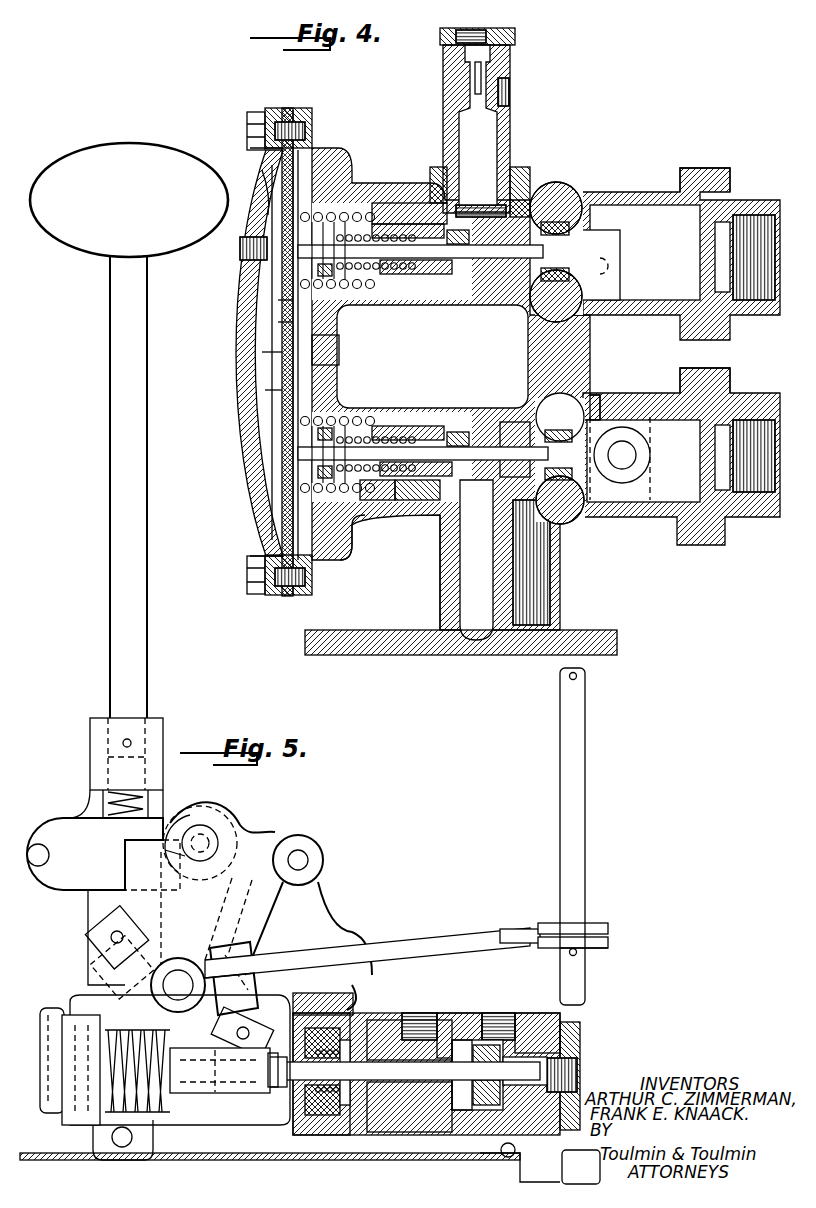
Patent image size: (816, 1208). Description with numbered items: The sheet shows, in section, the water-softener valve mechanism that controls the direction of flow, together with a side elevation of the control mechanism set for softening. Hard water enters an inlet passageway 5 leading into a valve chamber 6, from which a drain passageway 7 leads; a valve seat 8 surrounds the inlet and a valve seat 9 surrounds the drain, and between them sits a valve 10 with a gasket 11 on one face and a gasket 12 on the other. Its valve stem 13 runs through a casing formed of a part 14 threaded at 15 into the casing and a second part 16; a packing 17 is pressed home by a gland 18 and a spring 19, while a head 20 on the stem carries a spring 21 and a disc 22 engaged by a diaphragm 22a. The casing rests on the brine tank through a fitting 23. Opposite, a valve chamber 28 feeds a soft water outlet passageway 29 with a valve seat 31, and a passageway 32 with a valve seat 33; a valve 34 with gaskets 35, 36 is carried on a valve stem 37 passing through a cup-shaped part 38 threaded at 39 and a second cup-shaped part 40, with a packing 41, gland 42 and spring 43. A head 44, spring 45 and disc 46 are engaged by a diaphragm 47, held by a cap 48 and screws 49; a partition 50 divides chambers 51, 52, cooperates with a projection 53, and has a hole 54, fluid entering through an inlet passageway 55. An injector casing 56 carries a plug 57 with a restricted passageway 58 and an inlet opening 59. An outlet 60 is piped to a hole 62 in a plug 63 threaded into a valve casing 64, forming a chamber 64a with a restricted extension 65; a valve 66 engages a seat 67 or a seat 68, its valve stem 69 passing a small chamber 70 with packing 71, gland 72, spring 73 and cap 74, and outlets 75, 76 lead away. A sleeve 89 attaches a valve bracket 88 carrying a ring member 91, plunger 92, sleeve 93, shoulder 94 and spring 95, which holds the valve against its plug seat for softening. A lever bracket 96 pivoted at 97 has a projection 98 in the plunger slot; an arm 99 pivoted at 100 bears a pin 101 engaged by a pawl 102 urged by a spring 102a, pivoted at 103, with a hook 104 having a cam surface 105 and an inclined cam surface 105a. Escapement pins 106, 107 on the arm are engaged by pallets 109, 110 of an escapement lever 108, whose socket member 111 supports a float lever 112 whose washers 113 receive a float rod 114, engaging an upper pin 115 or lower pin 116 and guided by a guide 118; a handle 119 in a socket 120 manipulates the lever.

In FIG. 4, the inlet passageway 5 is at (722, 495).
In FIG. 4, the valve chamber 6 is at (592, 398).
In FIG. 4, the drain passageway 7 is at (458, 562).
In FIG. 4, the valve seat 8 is at (606, 405).
In FIG. 4, the valve seat 9 is at (515, 418).
In FIG. 4, the valve 10 is at (555, 486).
In FIG. 4, the gasket 11 is at (574, 490).
In FIG. 4, the gasket 12 is at (476, 560).
In FIG. 4, the valve stem 13 is at (478, 462).
In FIG. 4, the casing part 14 is at (478, 430).
In FIG. 4, the threads 15 is at (406, 424).
In FIG. 4, the casing part 16 is at (340, 428).
In FIG. 4, the packing 17 is at (446, 424).
In FIG. 4, the gland 18 is at (420, 500).
In FIG. 4, the spring 19 is at (378, 502).
In FIG. 4, the head 20 is at (290, 478).
In FIG. 4, the spring 21 is at (350, 522).
In FIG. 4, the disc 22 is at (282, 510).
In FIG. 4, the diaphragm 22a is at (282, 527).
In FIG. 4, the fitting 23 is at (612, 642).
In FIG. 4, the valve chamber 28 is at (592, 208).
In FIG. 4, the soft water outlet passageway 29 is at (634, 210).
In FIG. 4, the valve seat 31 is at (606, 272).
In FIG. 4, the passageway 32 is at (540, 190).
In FIG. 4, the valve seat 33 is at (545, 192).
In FIG. 4, the valve 34 is at (570, 216).
In FIG. 4, the gasket 35 is at (586, 312).
In FIG. 4, the gasket 36 is at (432, 356).
In FIG. 4, the valve stem 37 is at (506, 255).
In FIG. 4, the cup-shaped part 38 is at (432, 190).
In FIG. 4, the threads 39 is at (416, 212).
In FIG. 4, the cup-shaped part 40 is at (358, 203).
In FIG. 4, the packing 41 is at (440, 282).
In FIG. 4, the gland 42 is at (412, 296).
In FIG. 4, the spring 43 is at (388, 300).
In FIG. 4, the head 44 is at (285, 282).
In FIG. 4, the spring 45 is at (355, 296).
In FIG. 4, the disc 46 is at (280, 305).
In FIG. 4, the diaphragm 47 is at (278, 322).
In FIG. 4, the cap 48 is at (238, 430).
In FIG. 4, the screws 49 is at (255, 114).
In FIG. 4, the partition 50 is at (262, 352).
In FIG. 4, the chamber 51 is at (258, 440).
In FIG. 4, the chamber 52 is at (262, 200).
In FIG. 4, the projection 53 is at (320, 355).
In FIG. 4, the hole 54 is at (265, 390).
In FIG. 4, the inlet passageway 55 is at (240, 252).
In FIG. 4, the injector casing 56 is at (448, 122).
In FIG. 4, the plug 57 is at (510, 40).
In FIG. 4, the restricted passageway 58 is at (472, 86).
In FIG. 4, the inlet opening 59 is at (510, 96).
In FIG. 4, the outlet 60 is at (630, 482).
In FIG. 5, the hole 62 is at (578, 1086).
In FIG. 5, the plug 63 is at (580, 1046).
In FIG. 5, the valve casing 64 is at (430, 1125).
In FIG. 5, the chamber 64a is at (466, 1110).
In FIG. 5, the restricted extension 65 is at (412, 1122).
In FIG. 5, the valve 66 is at (500, 1080).
In FIG. 5, the seat 67 is at (540, 1016).
In FIG. 5, the seat 68 is at (466, 1035).
In FIG. 5, the valve stem 69 is at (402, 1071).
In FIG. 5, the small chamber 70 is at (320, 1122).
In FIG. 5, the packing 71 is at (352, 1120).
In FIG. 5, the gland 72 is at (330, 1118).
In FIG. 5, the spring 73 is at (300, 1125).
In FIG. 5, the cap 74 is at (292, 1160).
In FIG. 5, the outlet 75 is at (497, 1030).
In FIG. 5, the outlet 76 is at (424, 1030).
In FIG. 5, the valve bracket 88 is at (338, 936).
In FIG. 5, the sleeve 89 is at (356, 1010).
In FIG. 5, the ring member 91 is at (62, 1108).
In FIG. 5, the plunger 92 is at (235, 1090).
In FIG. 5, the sleeve 93 is at (62, 1122).
In FIG. 5, the shoulder 94 is at (150, 1110).
In FIG. 5, the spring 95 is at (132, 1122).
In FIG. 5, the lever bracket 96 is at (96, 943).
In FIG. 5, the pivot 97 is at (185, 976).
In FIG. 5, the projection 98 is at (200, 1095).
In FIG. 5, the arm 99 is at (250, 852).
In FIG. 5, the pivot 100 is at (303, 860).
In FIG. 5, the pin 101 is at (207, 832).
In FIG. 5, the pawl 102 is at (93, 870).
In FIG. 5, the spring 102a is at (126, 812).
In FIG. 5, the pivot 103 is at (36, 843).
In FIG. 5, the hook 104 is at (183, 845).
In FIG. 5, the cam surface 105 is at (203, 822).
In FIG. 5, the inclined cam surface 105a is at (172, 852).
In FIG. 5, the escapement pin 106 is at (242, 950).
In FIG. 5, the escapement pin 107 is at (213, 908).
In FIG. 5, the escapement lever 108 is at (110, 966).
In FIG. 5, the pallet 109 is at (100, 926).
In FIG. 5, the pallet 110 is at (262, 1034).
In FIG. 5, the socket member 111 is at (256, 974).
In FIG. 5, the float lever 112 is at (410, 945).
In FIG. 5, the washers 113 is at (590, 926).
In FIG. 5, the float rod 114 is at (578, 870).
In FIG. 5, the upper pin 115 is at (577, 676).
In FIG. 5, the lower pin 116 is at (577, 954).
In FIG. 5, the guide 118 is at (528, 1165).
In FIG. 4, the handle 119 is at (109, 470).
In FIG. 5, the socket 120 is at (102, 720).